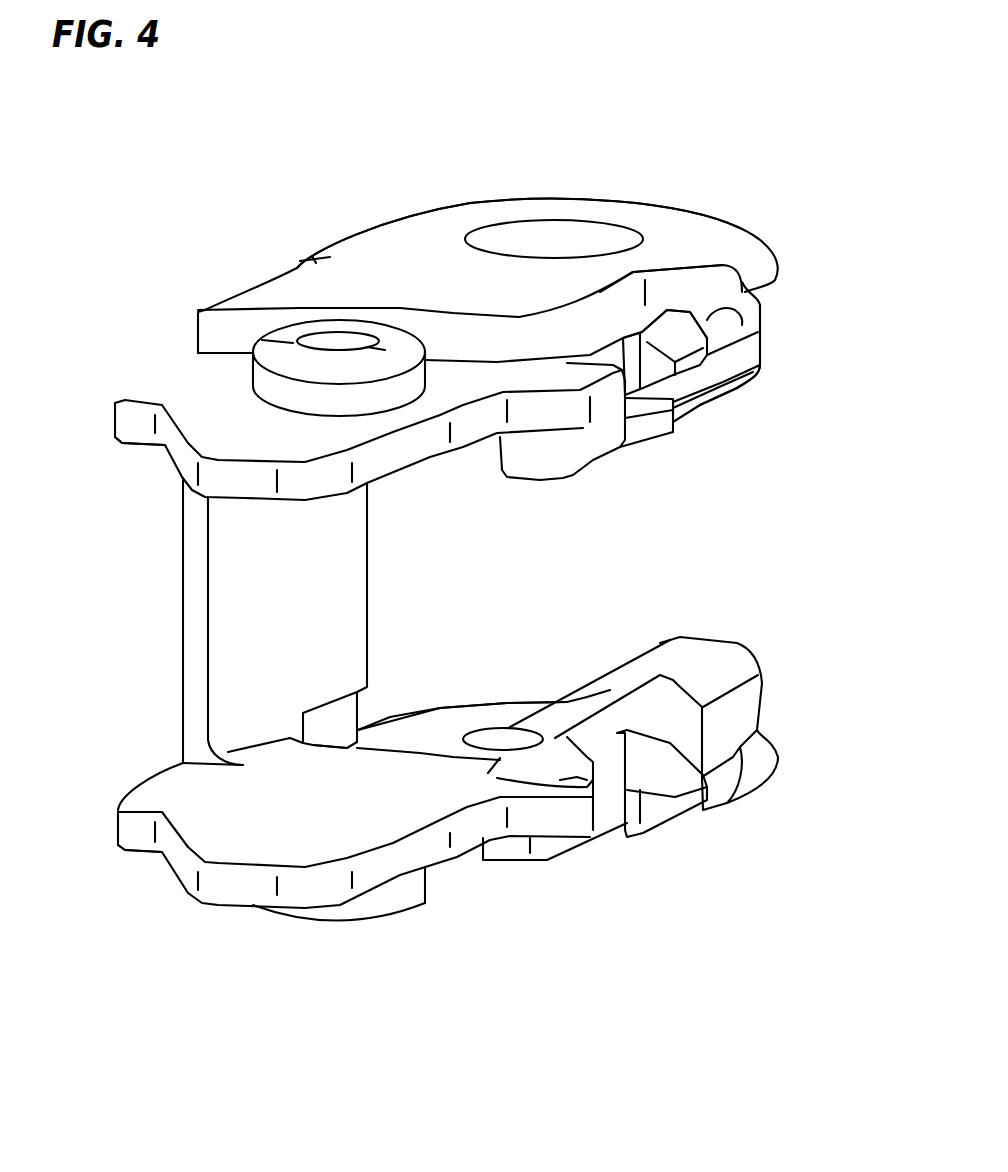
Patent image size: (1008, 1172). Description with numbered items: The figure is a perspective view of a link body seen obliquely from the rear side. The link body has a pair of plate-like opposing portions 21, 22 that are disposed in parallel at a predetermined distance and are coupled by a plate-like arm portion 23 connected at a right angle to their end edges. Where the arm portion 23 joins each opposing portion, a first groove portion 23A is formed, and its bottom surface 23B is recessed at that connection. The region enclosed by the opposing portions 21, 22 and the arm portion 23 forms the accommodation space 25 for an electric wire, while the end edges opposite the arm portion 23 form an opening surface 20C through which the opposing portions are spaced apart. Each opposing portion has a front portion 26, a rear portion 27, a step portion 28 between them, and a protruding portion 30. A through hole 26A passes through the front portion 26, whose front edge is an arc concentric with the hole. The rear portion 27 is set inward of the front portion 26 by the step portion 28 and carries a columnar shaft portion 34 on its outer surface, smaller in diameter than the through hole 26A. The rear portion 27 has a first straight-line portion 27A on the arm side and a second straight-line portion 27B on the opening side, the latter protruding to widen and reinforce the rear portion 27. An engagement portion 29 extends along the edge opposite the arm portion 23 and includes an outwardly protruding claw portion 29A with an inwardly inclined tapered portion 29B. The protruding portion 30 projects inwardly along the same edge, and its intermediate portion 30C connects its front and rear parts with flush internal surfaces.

The opening surface 20C is at (735, 527).
The opposing portion 21 is at (317, 223).
The opposing portion 22 is at (167, 927).
The arm portion 23 is at (253, 593).
The first groove portion 23A is at (392, 701).
The bottom surface 23B is at (347, 708).
The accommodation space 25 is at (671, 497).
The front portion 26 is at (530, 203).
The through hole 26A is at (582, 238).
The rear portion 27 is at (197, 387).
The first straight-line portion 27A is at (177, 448).
The second straight-line portion 27B is at (478, 428).
The step portion 28 is at (487, 340).
The engagement portion 29 is at (743, 290).
The claw portion 29A is at (658, 333).
The tapered portion 29B is at (678, 333).
The protruding portion 30 is at (737, 355).
The intermediate portion 30C is at (648, 438).
The shaft portion 34 is at (287, 327).